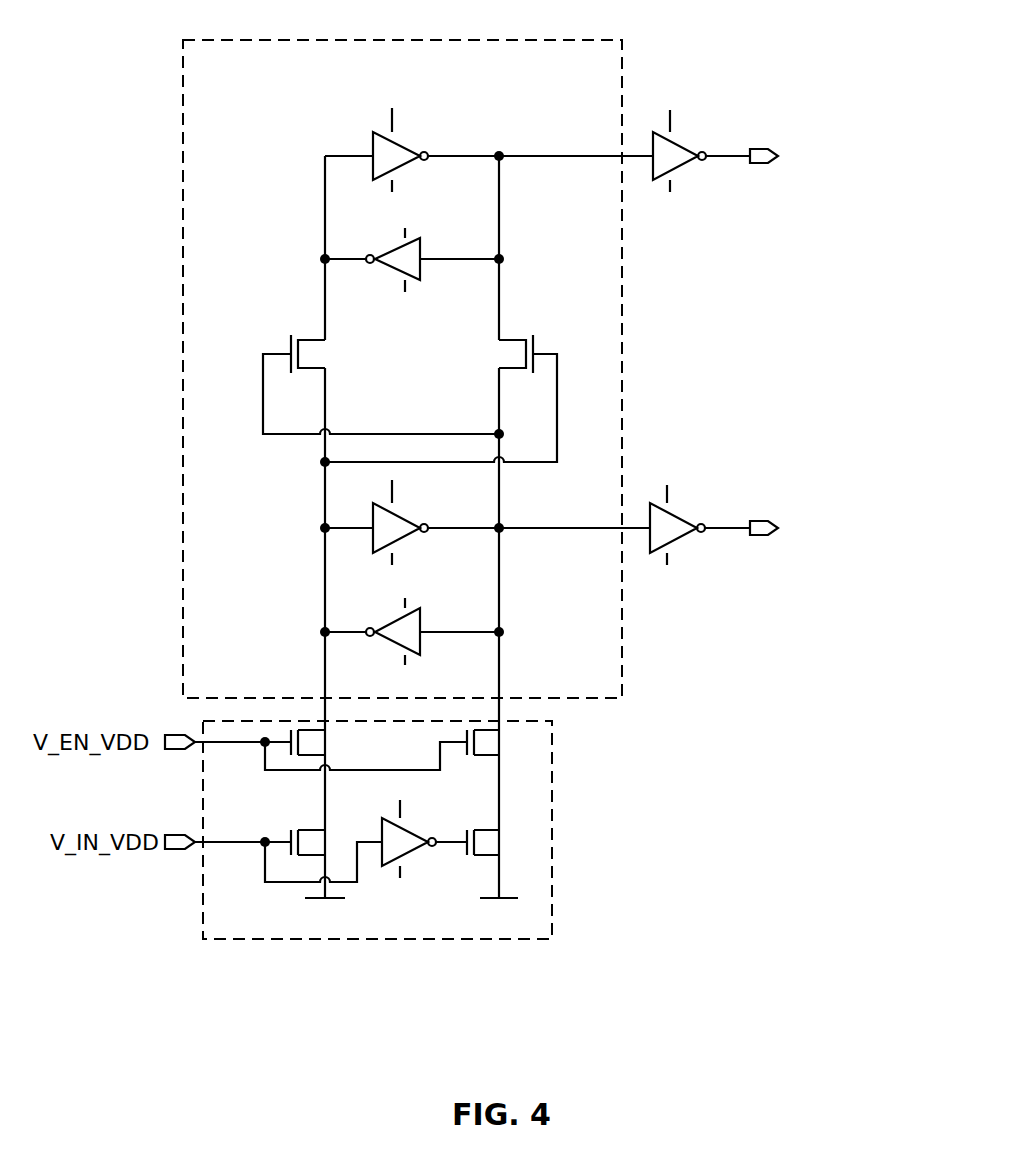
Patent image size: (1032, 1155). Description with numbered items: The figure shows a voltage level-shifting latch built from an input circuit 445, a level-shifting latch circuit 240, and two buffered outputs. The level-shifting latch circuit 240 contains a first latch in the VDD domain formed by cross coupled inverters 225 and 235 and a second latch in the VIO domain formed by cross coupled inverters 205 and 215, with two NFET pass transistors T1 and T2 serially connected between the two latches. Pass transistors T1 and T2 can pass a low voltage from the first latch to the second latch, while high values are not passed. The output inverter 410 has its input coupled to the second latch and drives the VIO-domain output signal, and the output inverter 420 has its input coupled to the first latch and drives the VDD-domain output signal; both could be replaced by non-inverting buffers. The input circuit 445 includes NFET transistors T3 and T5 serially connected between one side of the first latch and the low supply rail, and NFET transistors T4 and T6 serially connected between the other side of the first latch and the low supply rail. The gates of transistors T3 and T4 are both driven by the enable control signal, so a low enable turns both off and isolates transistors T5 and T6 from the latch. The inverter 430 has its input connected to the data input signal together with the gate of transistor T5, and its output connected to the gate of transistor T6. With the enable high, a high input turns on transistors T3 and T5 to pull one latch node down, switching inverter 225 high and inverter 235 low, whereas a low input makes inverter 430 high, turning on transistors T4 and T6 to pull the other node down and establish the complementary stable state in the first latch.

The level-shifting latch circuit 240 is at (183, 85).
The inverter 205 is at (398, 148).
The inverter 215 is at (412, 282).
The inverter 225 is at (400, 538).
The inverter 235 is at (420, 640).
The inverter 410 is at (690, 150).
The inverter 420 is at (688, 522).
The inverter 430 is at (412, 830).
The input circuit 445 is at (552, 778).
The NFET pass transistor T1 is at (381, 384).
The NFET pass transistor T2 is at (441, 398).
The NFET transistor T3 is at (366, 750).
The NFET transistor T4 is at (495, 742).
The NFET transistor T5 is at (323, 878).
The NFET transistor T6 is at (495, 878).